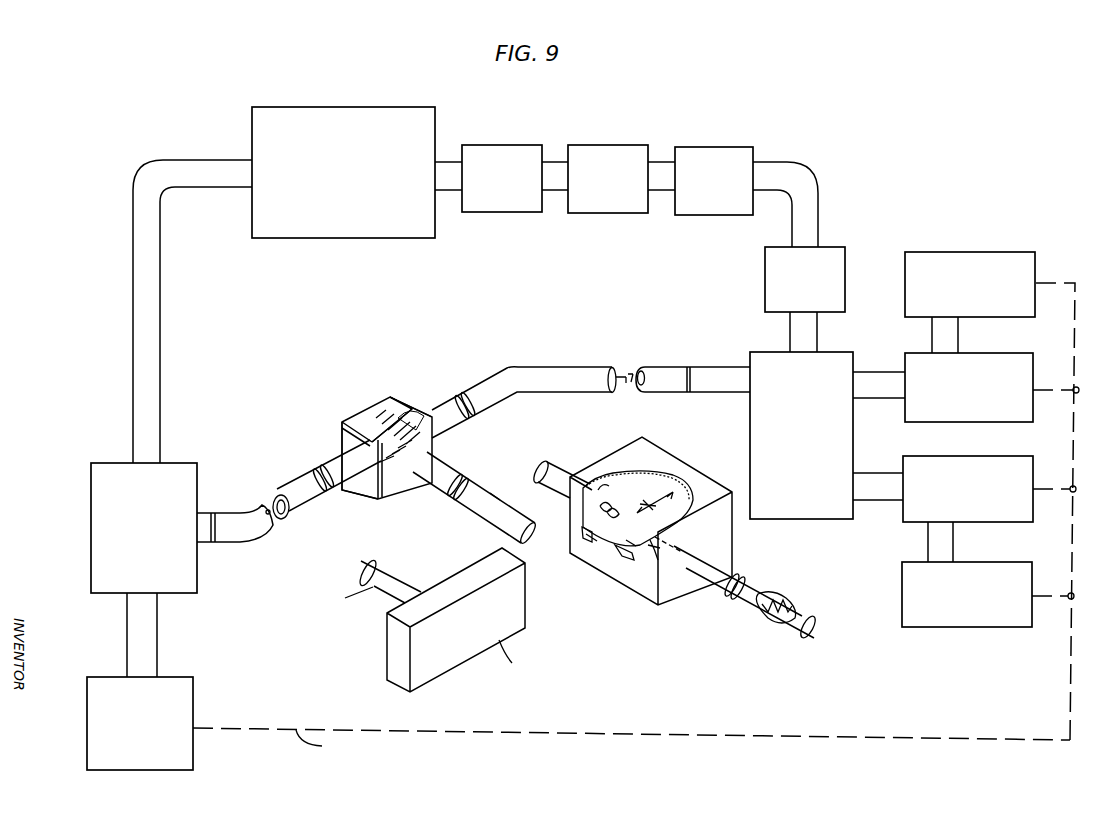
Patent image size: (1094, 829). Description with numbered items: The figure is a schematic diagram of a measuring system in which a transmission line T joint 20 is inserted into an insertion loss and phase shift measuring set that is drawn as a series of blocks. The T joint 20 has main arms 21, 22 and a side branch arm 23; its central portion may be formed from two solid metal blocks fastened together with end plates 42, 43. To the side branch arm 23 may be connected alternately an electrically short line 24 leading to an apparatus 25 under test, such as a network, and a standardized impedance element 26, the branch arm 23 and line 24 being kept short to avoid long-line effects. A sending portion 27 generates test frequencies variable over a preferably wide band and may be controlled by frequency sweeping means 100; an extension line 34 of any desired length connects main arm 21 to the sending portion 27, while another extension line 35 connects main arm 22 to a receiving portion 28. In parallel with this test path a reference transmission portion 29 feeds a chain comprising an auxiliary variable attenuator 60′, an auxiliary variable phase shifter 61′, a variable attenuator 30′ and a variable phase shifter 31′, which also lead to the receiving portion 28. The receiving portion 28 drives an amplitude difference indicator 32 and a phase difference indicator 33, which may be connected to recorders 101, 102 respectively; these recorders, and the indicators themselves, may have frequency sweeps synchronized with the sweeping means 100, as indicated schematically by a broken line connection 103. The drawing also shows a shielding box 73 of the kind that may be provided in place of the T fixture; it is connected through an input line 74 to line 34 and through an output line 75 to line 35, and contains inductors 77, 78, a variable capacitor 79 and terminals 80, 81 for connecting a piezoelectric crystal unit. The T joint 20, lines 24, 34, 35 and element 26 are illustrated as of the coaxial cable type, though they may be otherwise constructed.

The transmission line T joint 20 is at (384, 434).
The main arm 21 is at (337, 484).
The main arm 22 is at (445, 400).
The side branch arm 23 is at (438, 470).
The line 24 is at (393, 572).
The apparatus under test 25 is at (520, 612).
The standardized impedance element 26 is at (495, 498).
The sending portion 27 is at (106, 585).
The receiving portion 28 is at (820, 520).
The reference transmission portion 29 is at (301, 240).
The variable attenuator 30′ is at (714, 216).
The variable phase shifter 31′ is at (768, 263).
The amplitude difference indicator 32 is at (963, 357).
The phase difference indicator 33 is at (963, 520).
The extension line 34 is at (290, 488).
The extension line 35 is at (658, 372).
The end plate 42 is at (342, 440).
The end plate 43 is at (395, 400).
The auxiliary variable attenuator 60′ is at (486, 214).
The auxiliary variable phase shifter 61′ is at (600, 215).
The shielding box 73 is at (645, 437).
The input line 74 is at (735, 571).
The output line 75 is at (558, 466).
The inductor 77 is at (630, 506).
The inductor 78 is at (653, 542).
The variable capacitor 79 is at (663, 497).
The terminal 80 is at (620, 556).
The terminal 81 is at (585, 543).
The frequency sweeping means 100 is at (190, 690).
The recorder 101 is at (1033, 262).
The recorder 102 is at (995, 623).
The broken line connection 103 is at (941, 740).